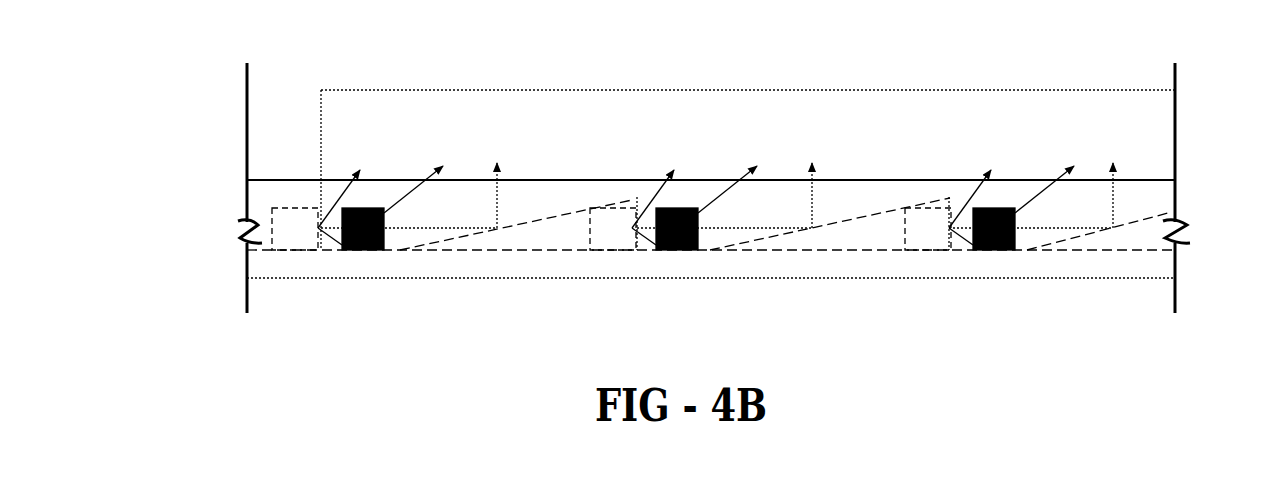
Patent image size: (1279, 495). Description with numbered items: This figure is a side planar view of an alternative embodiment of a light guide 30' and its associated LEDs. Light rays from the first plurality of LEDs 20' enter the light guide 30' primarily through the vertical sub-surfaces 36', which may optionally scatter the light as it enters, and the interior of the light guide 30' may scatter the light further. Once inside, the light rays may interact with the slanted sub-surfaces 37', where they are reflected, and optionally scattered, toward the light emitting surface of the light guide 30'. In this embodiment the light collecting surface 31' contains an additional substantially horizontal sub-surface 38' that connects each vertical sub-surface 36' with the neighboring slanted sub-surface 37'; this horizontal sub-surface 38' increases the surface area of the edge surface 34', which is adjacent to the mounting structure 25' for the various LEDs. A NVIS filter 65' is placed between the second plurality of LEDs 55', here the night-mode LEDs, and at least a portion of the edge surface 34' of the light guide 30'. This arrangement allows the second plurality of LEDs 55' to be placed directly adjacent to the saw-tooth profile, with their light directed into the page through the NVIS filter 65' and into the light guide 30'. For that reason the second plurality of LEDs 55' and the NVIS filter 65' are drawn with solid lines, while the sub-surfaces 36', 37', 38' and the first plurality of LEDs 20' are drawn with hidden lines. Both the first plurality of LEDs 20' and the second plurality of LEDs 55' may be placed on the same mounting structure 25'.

The first plurality of LEDs 20' is at (651, 283).
The mounting structure 25' is at (763, 304).
The light guide 30' is at (758, 185).
The light collecting surface 31' is at (756, 260).
The edge surface 34' is at (800, 73).
The vertical sub-surfaces 36' is at (532, 134).
The slanted sub-surfaces 37' is at (786, 278).
The horizontal sub-surface 38' is at (727, 134).
The second plurality of LEDs 55' is at (701, 134).
The NVIS filter 65' is at (763, 139).